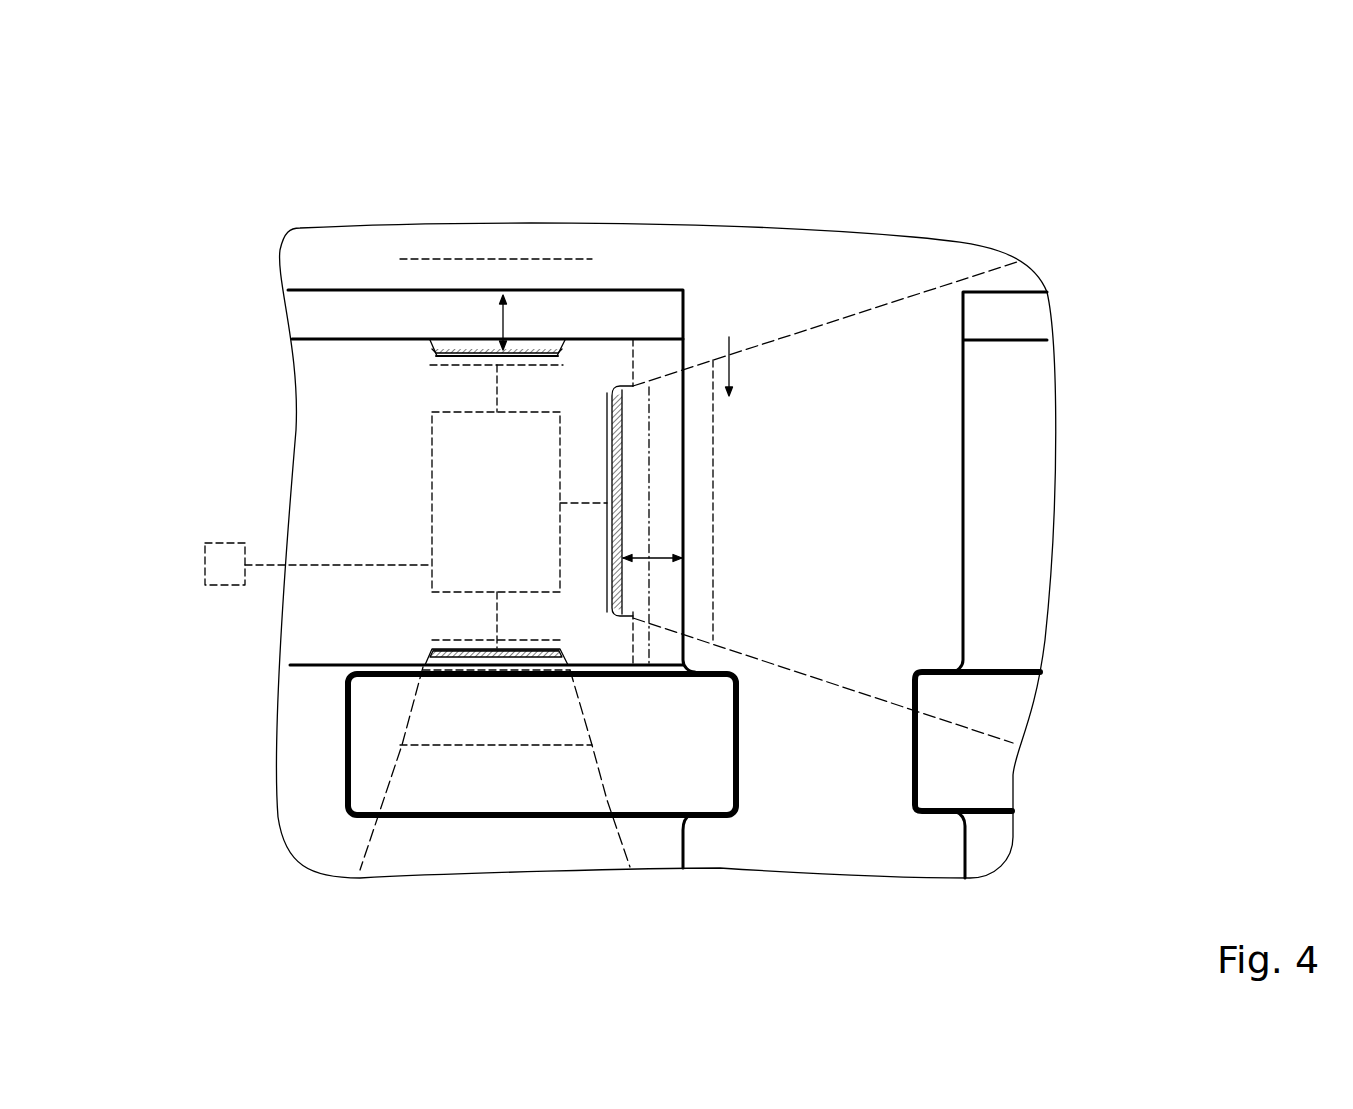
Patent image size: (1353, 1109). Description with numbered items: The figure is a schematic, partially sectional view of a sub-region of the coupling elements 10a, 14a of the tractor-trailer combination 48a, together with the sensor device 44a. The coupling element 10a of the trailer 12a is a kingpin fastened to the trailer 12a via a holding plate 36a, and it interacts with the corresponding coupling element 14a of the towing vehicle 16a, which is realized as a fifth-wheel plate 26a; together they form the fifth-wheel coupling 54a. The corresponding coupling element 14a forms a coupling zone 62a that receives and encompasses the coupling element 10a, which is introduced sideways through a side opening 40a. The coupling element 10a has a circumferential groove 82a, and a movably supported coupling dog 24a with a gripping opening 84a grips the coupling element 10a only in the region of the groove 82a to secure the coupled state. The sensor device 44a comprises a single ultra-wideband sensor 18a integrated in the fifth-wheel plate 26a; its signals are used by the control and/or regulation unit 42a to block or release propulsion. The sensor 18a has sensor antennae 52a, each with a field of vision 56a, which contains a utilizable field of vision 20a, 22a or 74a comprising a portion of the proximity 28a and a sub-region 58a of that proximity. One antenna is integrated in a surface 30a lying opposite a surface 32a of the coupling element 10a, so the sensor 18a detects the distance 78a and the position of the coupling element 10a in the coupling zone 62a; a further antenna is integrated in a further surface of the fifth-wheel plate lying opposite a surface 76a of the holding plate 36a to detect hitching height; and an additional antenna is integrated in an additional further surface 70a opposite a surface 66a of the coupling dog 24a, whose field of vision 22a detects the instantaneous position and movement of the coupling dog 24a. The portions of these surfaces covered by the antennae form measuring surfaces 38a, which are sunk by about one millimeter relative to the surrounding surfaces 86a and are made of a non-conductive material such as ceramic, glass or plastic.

The coupling element 10a is at (887, 507).
The trailer 12a is at (932, 267).
The corresponding coupling element 14a is at (402, 389).
The towing vehicle 16a is at (337, 378).
The sensor 18a is at (477, 495).
The utilizable field of vision 20a is at (766, 384).
The utilizable field of vision 22a is at (443, 735).
The coupling dog 24a is at (990, 707).
The fifth-wheel plate 26a is at (345, 600).
The proximity 28a is at (454, 313).
The surface 30a is at (631, 450).
The surface 32a is at (683, 513).
The holding plate 36a is at (313, 257).
The measuring surface 38a is at (473, 348).
The side opening 40a is at (1113, 582).
The control and/or regulation unit 42a is at (205, 552).
The sensor device 44a is at (587, 385).
The tractor-trailer combination 48a is at (1012, 188).
The sensor antenna 52a is at (452, 365).
The fifth-wheel coupling 54a is at (1018, 451).
The field of vision 56a is at (403, 745).
The sub-region 58a is at (434, 277).
The coupling zone 62a is at (657, 553).
The surface 66a is at (510, 670).
The additional further surface 70a is at (472, 663).
The utilizable field of vision 74a is at (547, 272).
The surface 76a is at (441, 298).
The distance 78a is at (875, 613).
The groove 82a is at (925, 768).
The gripping opening 84a is at (852, 790).
The surrounding surfaces 86a is at (636, 358).